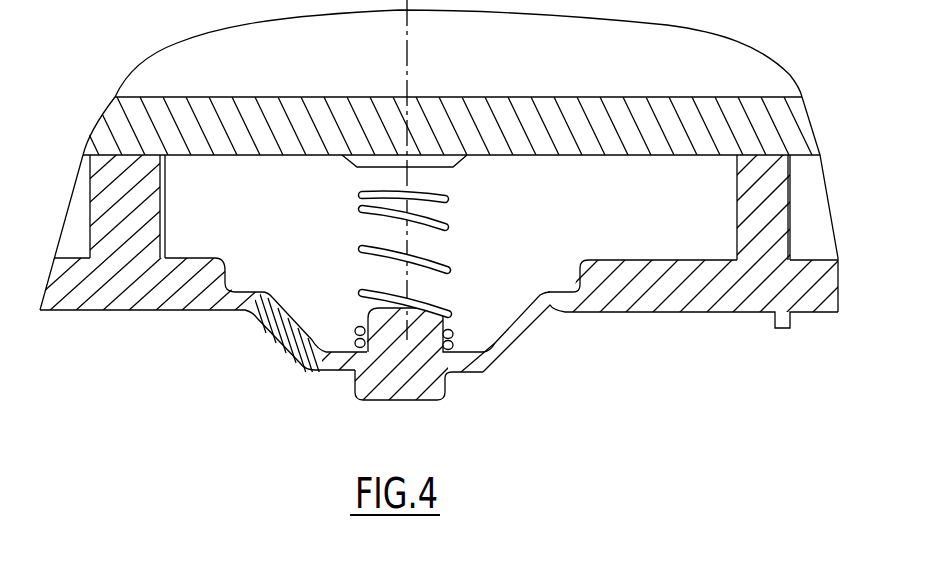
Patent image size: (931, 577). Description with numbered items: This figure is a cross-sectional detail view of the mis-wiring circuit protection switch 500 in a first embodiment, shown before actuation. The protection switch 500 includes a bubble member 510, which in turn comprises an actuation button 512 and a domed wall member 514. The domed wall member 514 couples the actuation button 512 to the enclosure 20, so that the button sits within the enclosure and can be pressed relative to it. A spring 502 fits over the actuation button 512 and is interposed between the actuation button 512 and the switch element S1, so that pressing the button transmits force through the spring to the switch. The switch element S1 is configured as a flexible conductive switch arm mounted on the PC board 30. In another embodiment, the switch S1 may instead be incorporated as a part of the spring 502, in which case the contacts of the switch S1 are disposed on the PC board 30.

The enclosure 20 is at (465, 302).
The PC board 30 is at (637, 85).
The protection switch 500 is at (154, 379).
The spring 502 is at (349, 360).
The bubble member 510 is at (496, 302).
The actuation button 512 is at (408, 387).
The domed wall member 514 is at (516, 338).
The switch element S1 is at (399, 287).